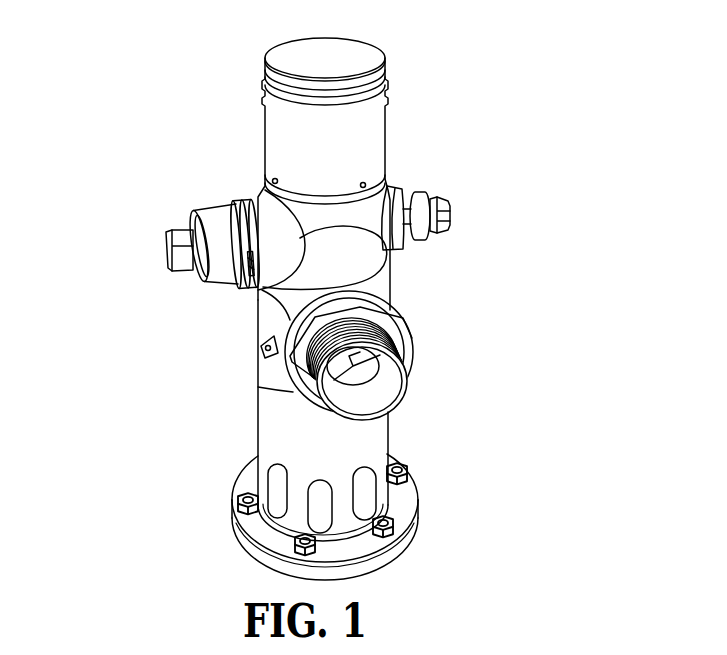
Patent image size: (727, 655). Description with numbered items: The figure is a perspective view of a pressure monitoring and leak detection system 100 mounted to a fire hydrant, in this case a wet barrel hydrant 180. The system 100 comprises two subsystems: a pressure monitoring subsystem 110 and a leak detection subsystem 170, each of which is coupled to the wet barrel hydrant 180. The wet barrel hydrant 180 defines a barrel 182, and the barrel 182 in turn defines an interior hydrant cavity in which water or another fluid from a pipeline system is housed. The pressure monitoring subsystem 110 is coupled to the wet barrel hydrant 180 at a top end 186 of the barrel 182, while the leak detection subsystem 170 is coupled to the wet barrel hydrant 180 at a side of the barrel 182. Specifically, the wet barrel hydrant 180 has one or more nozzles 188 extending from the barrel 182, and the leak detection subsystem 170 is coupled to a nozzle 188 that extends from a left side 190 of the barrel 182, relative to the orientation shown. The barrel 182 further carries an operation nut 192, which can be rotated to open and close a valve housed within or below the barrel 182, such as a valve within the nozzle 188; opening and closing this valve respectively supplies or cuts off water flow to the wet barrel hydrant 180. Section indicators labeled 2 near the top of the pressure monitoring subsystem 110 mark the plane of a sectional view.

The section line 2- 2 is at (262, 63).
The pressure monitoring and leak detection system 100 is at (158, 110).
The pressure monitoring subsystem 110 is at (429, 124).
The leak detection subsystem 170 is at (166, 240).
The wet barrel hydrant 180 is at (415, 422).
The barrel 182 is at (352, 267).
The top end 186 is at (392, 187).
The nozzle 188 is at (253, 287).
The left side 190 is at (266, 228).
The operation nut 192 is at (444, 213).